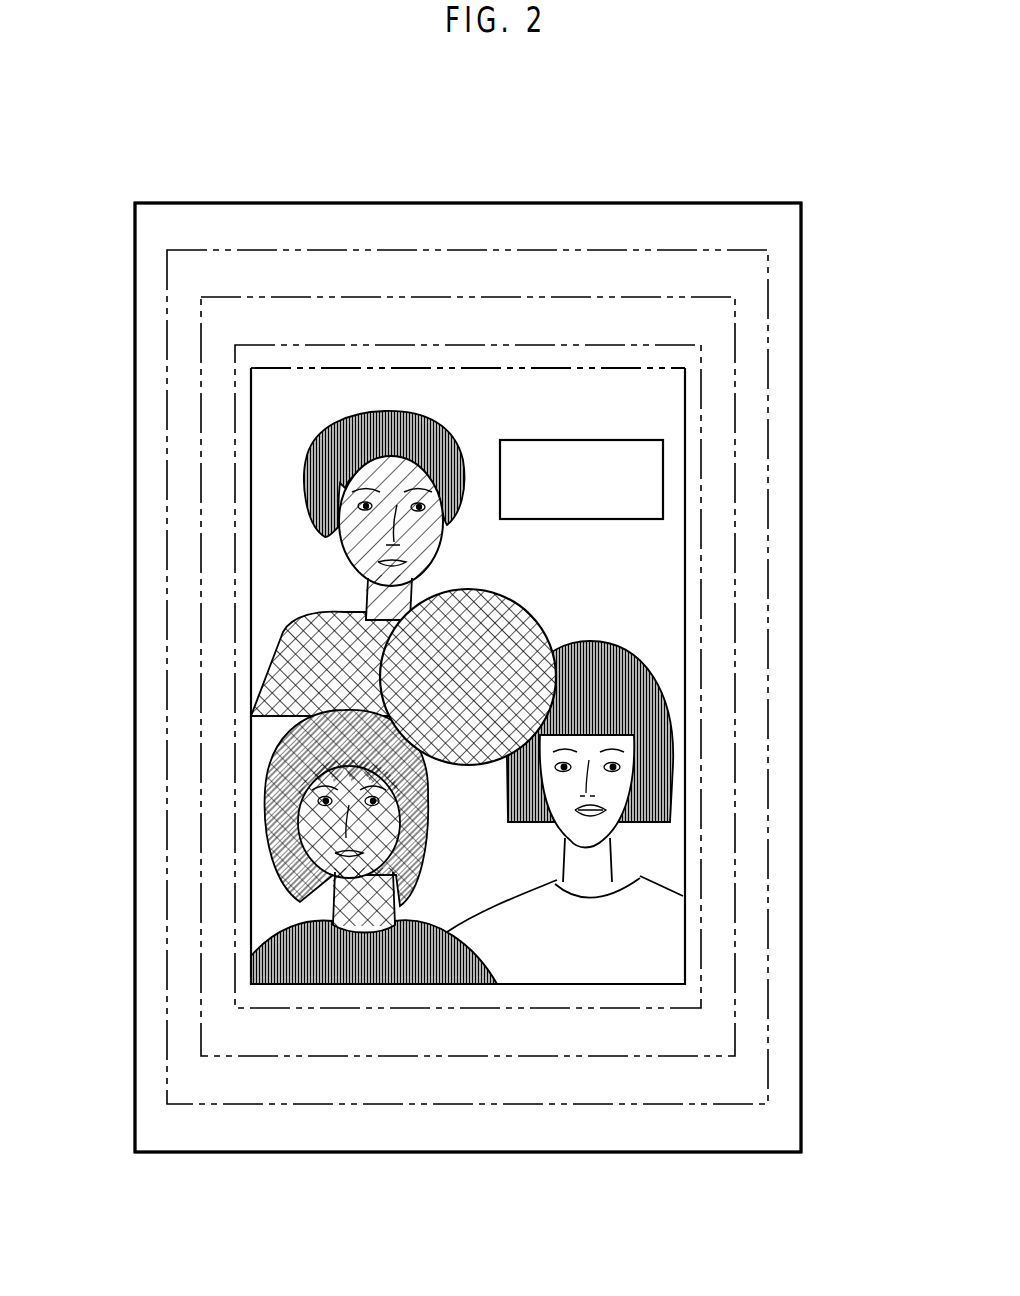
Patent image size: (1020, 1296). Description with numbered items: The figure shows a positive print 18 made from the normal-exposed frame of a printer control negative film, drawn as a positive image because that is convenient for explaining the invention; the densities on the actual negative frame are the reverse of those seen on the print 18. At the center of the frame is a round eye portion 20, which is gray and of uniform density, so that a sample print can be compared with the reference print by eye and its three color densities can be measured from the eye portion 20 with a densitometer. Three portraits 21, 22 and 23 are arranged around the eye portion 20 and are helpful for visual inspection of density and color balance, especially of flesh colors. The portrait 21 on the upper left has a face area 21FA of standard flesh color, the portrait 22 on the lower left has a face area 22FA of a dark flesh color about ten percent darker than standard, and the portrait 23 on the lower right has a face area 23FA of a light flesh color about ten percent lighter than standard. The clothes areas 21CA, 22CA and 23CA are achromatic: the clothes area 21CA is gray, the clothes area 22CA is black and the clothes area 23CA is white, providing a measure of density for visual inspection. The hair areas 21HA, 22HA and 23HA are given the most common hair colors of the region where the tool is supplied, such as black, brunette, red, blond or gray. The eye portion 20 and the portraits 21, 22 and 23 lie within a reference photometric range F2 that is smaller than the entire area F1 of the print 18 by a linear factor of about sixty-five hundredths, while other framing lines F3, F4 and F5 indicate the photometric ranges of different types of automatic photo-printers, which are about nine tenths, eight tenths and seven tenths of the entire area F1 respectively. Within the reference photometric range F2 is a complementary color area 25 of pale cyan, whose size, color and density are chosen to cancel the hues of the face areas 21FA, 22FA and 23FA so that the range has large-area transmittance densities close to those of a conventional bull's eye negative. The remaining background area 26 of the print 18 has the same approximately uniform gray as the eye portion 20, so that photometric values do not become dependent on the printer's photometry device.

The print 18 is at (362, 185).
The eye portion 20 is at (515, 617).
The portrait 21 is at (304, 550).
The hair area 21HA is at (328, 440).
The face area 21FA is at (440, 550).
The clothes area 21CA is at (302, 618).
The portrait 22 is at (277, 966).
The hair area 22HA is at (265, 776).
The face area 22FA is at (397, 824).
The clothes area 22CA is at (300, 985).
The portrait 23 is at (656, 908).
The hair area 23HA is at (607, 650).
The face area 23FA is at (568, 843).
The clothes area 23CA is at (566, 970).
The complementary color area 25 is at (556, 445).
The background area 26 is at (797, 497).
The entire area F1 is at (230, 203).
The reference photometric range F2 is at (478, 367).
The framing line F3 is at (232, 250).
The framing line F4 is at (243, 297).
The framing line F5 is at (276, 345).